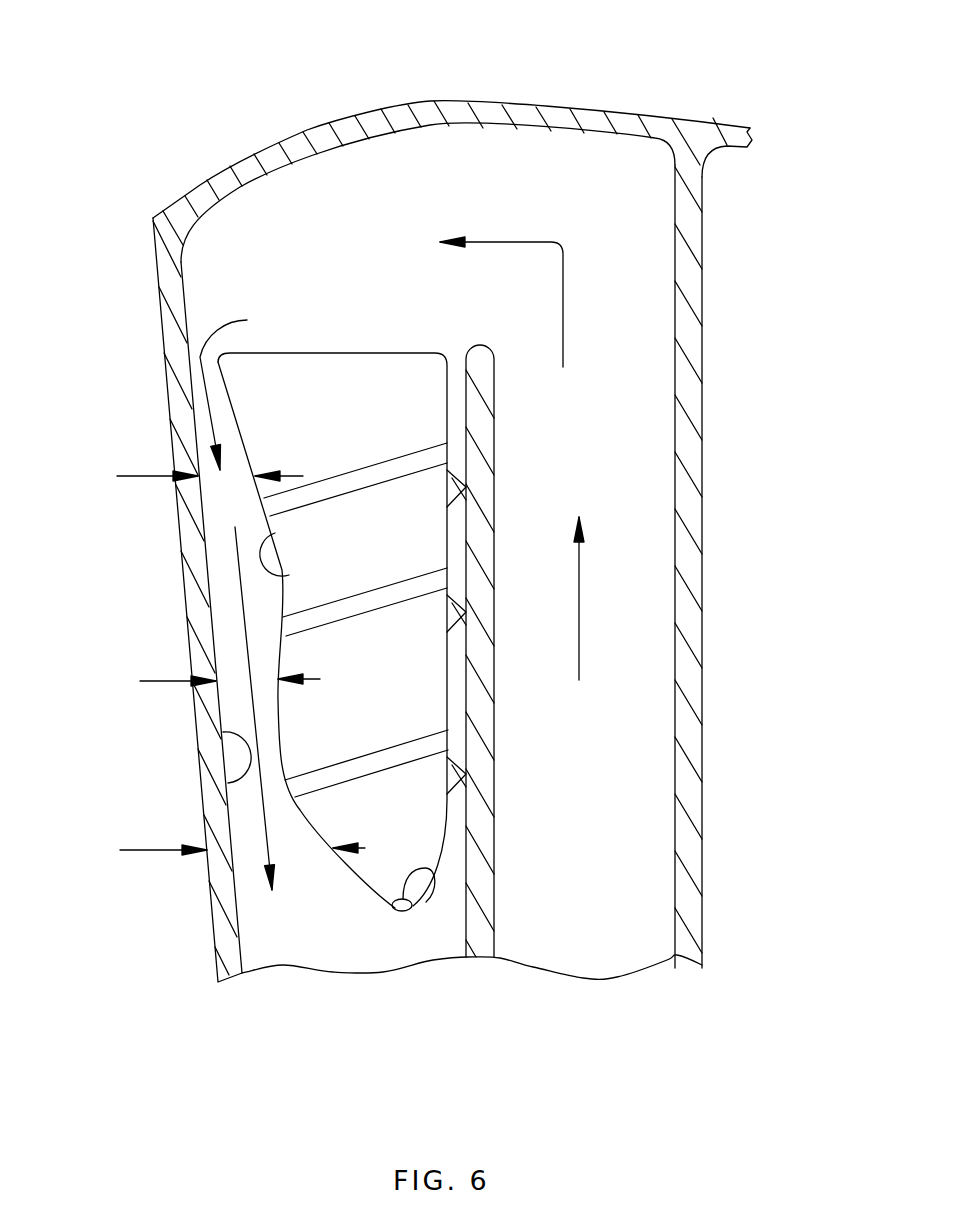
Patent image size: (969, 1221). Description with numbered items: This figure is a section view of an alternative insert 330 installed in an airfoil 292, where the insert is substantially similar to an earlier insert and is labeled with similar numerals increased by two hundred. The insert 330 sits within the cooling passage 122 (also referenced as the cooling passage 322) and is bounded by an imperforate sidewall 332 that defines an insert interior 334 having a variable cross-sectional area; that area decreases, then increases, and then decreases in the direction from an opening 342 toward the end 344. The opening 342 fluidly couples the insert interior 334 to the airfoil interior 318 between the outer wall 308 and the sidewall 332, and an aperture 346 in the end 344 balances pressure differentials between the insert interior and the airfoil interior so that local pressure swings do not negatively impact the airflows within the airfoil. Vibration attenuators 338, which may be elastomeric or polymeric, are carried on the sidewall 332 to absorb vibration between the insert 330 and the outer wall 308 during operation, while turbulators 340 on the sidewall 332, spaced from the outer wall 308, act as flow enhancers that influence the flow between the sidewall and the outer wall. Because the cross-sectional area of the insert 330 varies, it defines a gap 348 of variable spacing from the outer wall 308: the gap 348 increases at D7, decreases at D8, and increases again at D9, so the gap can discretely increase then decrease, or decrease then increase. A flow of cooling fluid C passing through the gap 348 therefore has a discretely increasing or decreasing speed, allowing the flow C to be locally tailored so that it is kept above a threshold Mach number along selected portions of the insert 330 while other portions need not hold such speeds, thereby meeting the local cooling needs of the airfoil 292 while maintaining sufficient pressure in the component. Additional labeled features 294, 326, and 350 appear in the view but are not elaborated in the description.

The airfoil 292 is at (181, 43).
The outer casing wall 294 is at (430, 100).
The airfoil interior 318 is at (450, 195).
The opening 342 is at (293, 352).
The insert interior 334 is at (320, 393).
The insert 330 is at (382, 347).
The outer wall 308 is at (167, 387).
The flow channel 350 is at (208, 408).
The gap 348 is at (230, 607).
The protrusion 326 is at (222, 733).
The cooling passage 322 is at (317, 935).
The end 344 is at (392, 910).
The aperture 346 is at (435, 869).
The vibration attenuator 338 is at (460, 470).
The turbulator 340 is at (410, 477).
The sidewall 332 is at (270, 572).
The cooling passage 122 is at (640, 784).
The gap spacing D7 is at (140, 478).
The gap spacing D8 is at (152, 681).
The gap spacing D9 is at (140, 850).
The flow of cooling fluid C is at (395, 563).